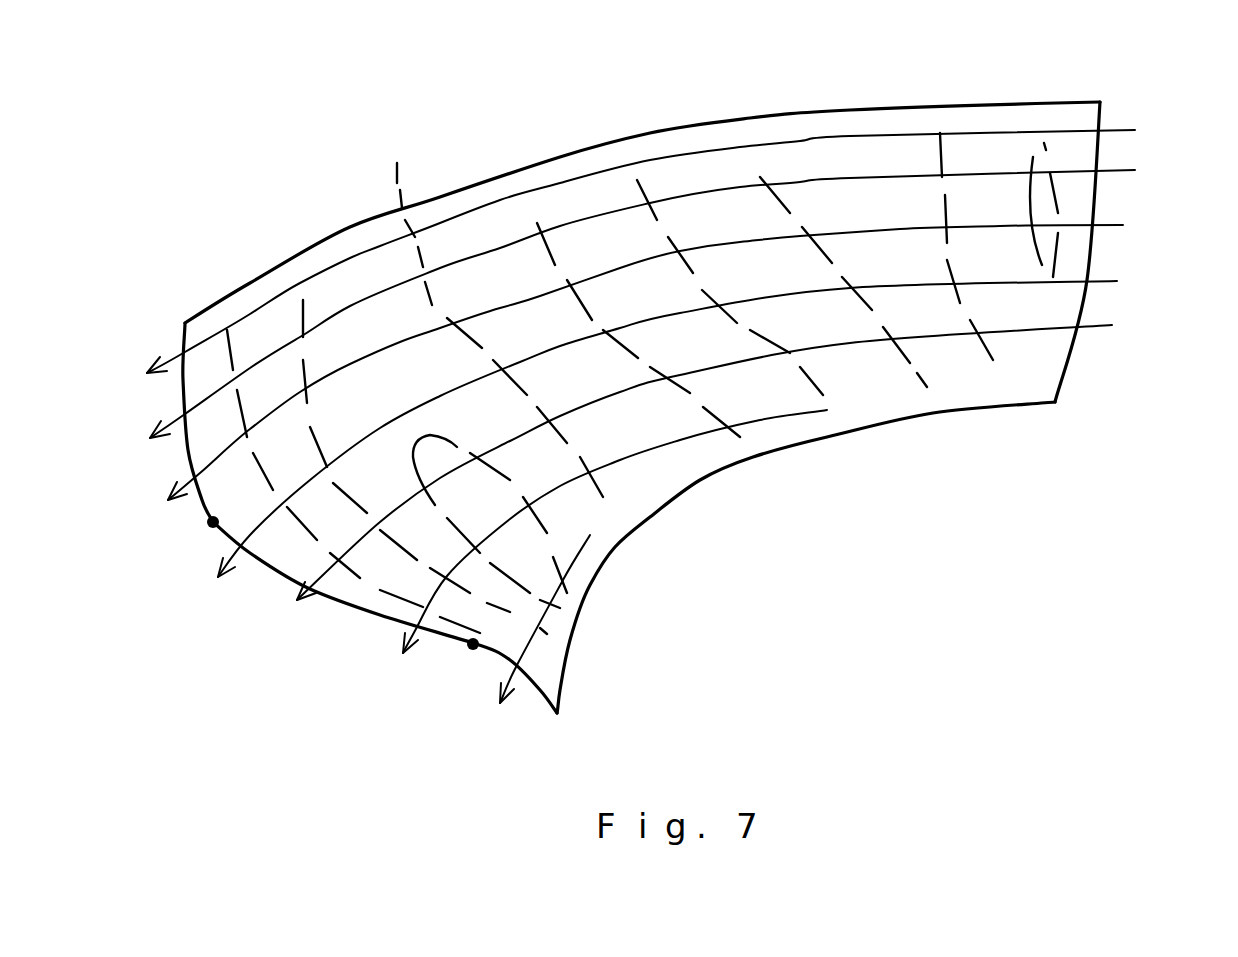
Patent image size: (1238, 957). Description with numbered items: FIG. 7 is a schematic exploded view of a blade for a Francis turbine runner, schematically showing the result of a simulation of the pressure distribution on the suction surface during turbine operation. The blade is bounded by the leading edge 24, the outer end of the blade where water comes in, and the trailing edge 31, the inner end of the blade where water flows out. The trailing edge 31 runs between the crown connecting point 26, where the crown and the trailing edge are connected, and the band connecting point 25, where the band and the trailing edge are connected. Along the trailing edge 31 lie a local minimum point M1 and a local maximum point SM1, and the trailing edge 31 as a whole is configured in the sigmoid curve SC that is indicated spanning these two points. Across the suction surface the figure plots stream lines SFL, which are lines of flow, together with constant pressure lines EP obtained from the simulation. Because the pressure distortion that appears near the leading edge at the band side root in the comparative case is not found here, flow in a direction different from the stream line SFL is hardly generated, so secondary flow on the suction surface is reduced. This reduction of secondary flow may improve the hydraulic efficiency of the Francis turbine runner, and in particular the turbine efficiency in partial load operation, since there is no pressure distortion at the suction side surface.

The leading edge 24 is at (1083, 298).
The band connecting point 25 is at (753, 457).
The crown connecting point 26 is at (738, 118).
The trailing edge 31 is at (187, 446).
The stream line SFL is at (596, 178).
The constant pressure line EP is at (642, 372).
The local minimum point M1 is at (213, 530).
The local maximum point SM1 is at (470, 650).
The sigmoid curve SC is at (340, 744).